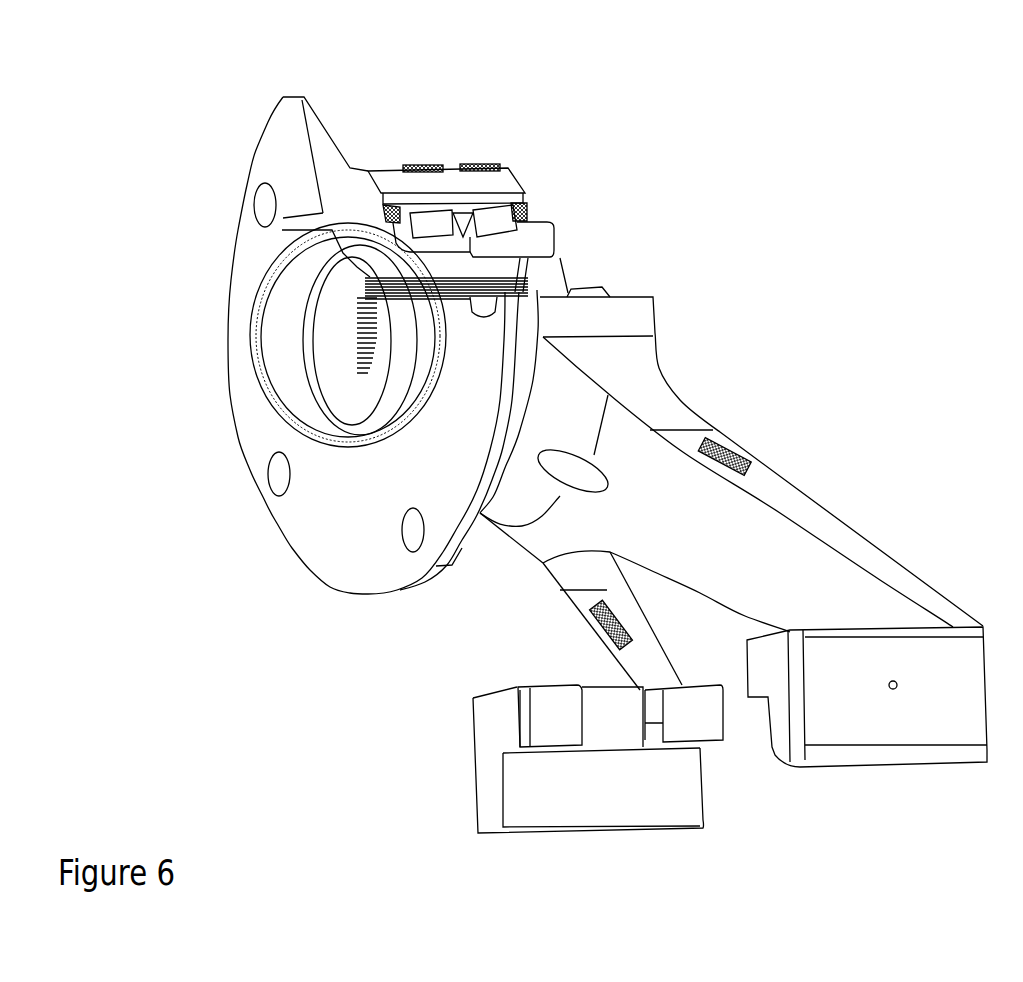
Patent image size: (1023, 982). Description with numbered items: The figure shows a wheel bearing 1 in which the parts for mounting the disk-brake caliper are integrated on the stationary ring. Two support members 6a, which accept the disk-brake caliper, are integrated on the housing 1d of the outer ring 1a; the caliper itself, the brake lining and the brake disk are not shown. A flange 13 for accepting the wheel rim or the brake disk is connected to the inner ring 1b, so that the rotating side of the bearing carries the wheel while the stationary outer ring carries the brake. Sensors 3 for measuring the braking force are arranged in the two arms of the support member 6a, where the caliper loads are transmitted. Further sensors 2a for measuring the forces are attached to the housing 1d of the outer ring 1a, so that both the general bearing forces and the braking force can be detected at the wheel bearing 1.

The flange 13 is at (330, 180).
The housing 1d is at (395, 183).
The sensors 2a is at (425, 166).
The outer ring 1a is at (486, 201).
The wheel bearing 1 is at (537, 188).
The inner ring 1b is at (532, 229).
The support members 6a is at (640, 385).
The sensors 3 is at (722, 460).